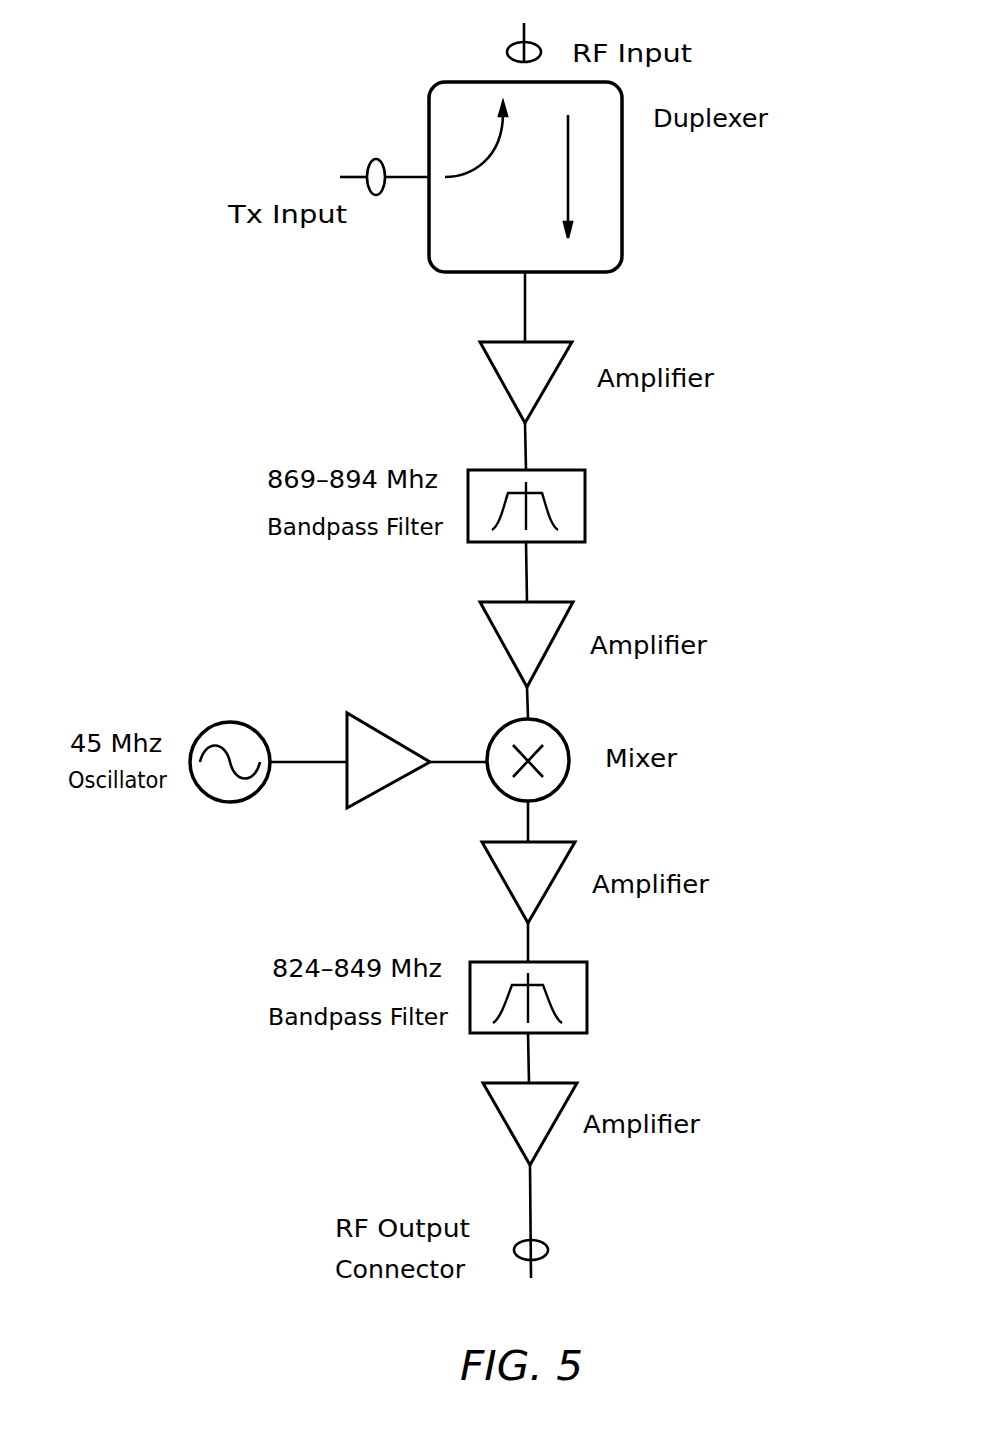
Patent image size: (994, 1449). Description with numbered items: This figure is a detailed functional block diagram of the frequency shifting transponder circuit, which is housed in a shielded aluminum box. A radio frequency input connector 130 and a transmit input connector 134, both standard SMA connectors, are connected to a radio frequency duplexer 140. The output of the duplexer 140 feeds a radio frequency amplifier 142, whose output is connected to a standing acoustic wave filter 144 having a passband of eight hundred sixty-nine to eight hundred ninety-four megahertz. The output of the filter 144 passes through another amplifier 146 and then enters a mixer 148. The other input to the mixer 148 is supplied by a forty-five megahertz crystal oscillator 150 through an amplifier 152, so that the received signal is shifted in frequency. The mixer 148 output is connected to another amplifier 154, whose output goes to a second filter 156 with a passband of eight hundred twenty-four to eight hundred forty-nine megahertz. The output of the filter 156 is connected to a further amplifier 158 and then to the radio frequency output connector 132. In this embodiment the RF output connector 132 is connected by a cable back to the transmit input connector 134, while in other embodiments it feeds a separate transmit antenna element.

The radio frequency input connector 130 is at (508, 43).
The radio frequency output connector 132 is at (545, 1242).
The transmit input connector 134 is at (375, 160).
The radio frequency duplexer 140 is at (623, 217).
The radio frequency amplifier 142 is at (502, 385).
The passband standing acoustic wave filter 144 is at (578, 468).
The amplifier 146 is at (503, 647).
The mixer 148 is at (560, 730).
The crystal oscillator 150 is at (237, 720).
The amplifier 152 is at (380, 792).
The amplifier 154 is at (503, 887).
The filter 156 is at (578, 958).
The amplifier 158 is at (510, 1135).